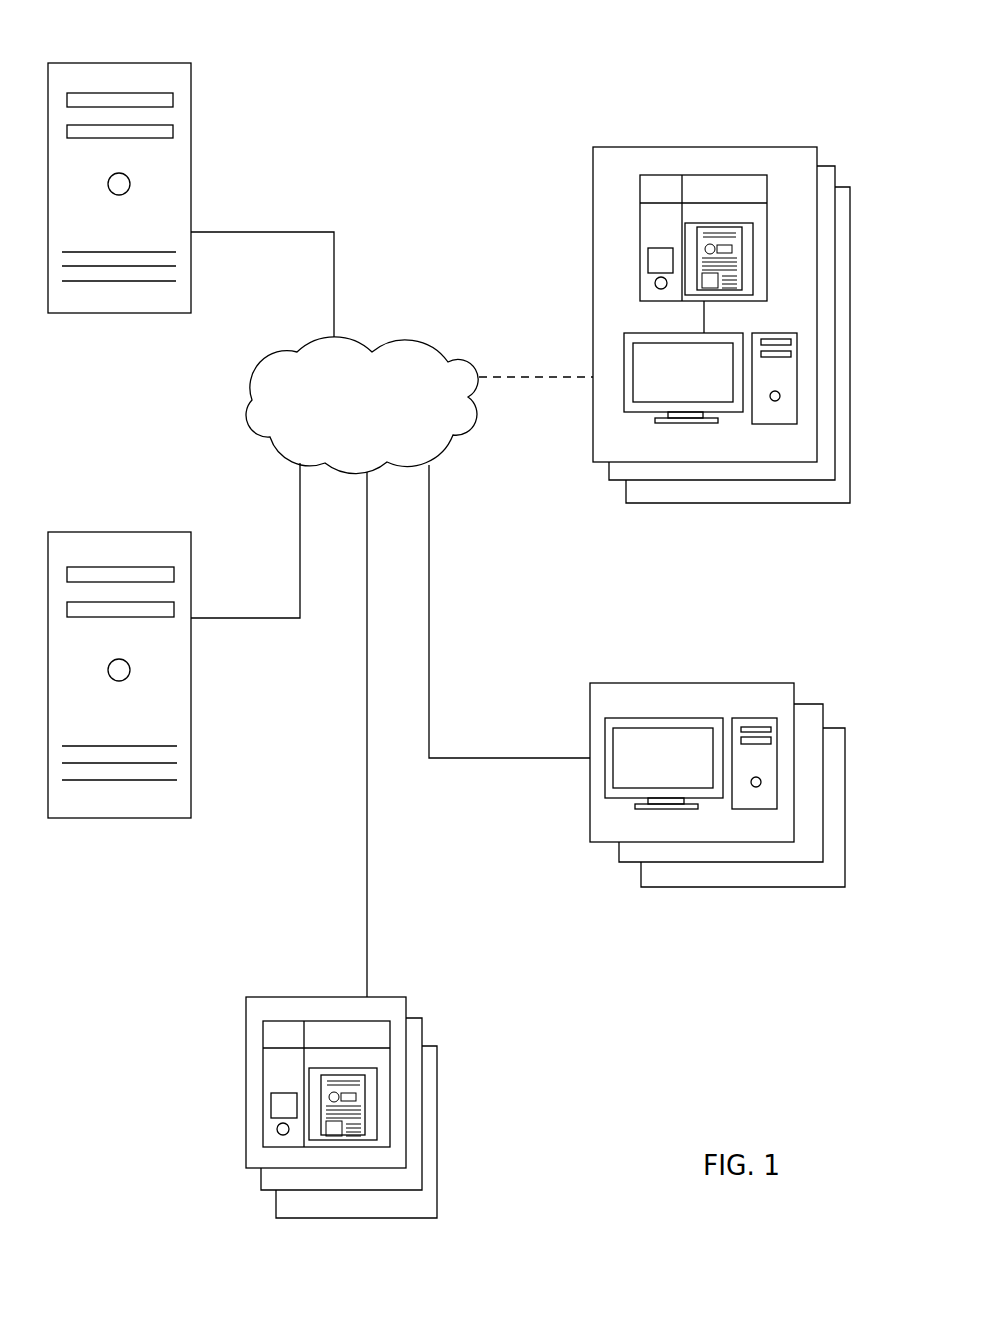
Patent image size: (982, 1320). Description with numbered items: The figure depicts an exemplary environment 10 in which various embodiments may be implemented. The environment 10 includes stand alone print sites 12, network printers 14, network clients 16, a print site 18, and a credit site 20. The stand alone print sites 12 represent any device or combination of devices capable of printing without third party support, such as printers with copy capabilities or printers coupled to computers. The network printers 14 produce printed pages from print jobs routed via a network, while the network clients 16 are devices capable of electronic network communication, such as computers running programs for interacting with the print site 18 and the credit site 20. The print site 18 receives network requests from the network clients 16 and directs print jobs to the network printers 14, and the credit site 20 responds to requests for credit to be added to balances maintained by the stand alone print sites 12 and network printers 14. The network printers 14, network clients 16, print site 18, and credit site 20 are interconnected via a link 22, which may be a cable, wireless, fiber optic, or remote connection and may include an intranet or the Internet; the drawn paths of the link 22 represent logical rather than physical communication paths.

The environment 10 is at (453, 170).
The stand alone print site 12 is at (852, 193).
The network printer 14 is at (438, 1046).
The network client 16 is at (845, 728).
The print site 18 is at (191, 137).
The credit site 20 is at (191, 722).
The link 22 is at (382, 340).